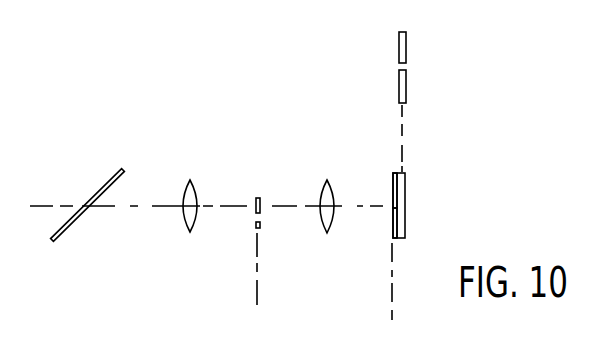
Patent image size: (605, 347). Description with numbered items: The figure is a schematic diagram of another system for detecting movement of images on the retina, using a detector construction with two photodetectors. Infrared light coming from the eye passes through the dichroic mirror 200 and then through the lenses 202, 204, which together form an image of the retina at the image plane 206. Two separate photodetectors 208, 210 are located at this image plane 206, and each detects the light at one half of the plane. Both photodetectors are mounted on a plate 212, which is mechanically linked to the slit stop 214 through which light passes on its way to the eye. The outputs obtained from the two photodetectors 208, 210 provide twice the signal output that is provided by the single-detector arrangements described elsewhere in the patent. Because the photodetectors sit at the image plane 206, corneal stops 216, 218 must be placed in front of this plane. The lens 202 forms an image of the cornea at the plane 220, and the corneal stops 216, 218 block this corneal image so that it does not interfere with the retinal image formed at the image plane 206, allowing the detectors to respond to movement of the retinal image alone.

The dichroic mirror 200 is at (104, 174).
The lens 202 is at (193, 181).
The lens 204 is at (326, 183).
The image plane 206 is at (393, 305).
The photodetector 208 is at (393, 182).
The photodetector 210 is at (391, 228).
The plate 212 is at (407, 190).
The slit stop 214 is at (406, 80).
The corneal stop 216 is at (256, 210).
The corneal stop 218 is at (262, 225).
The corneal image plane 220 is at (258, 290).